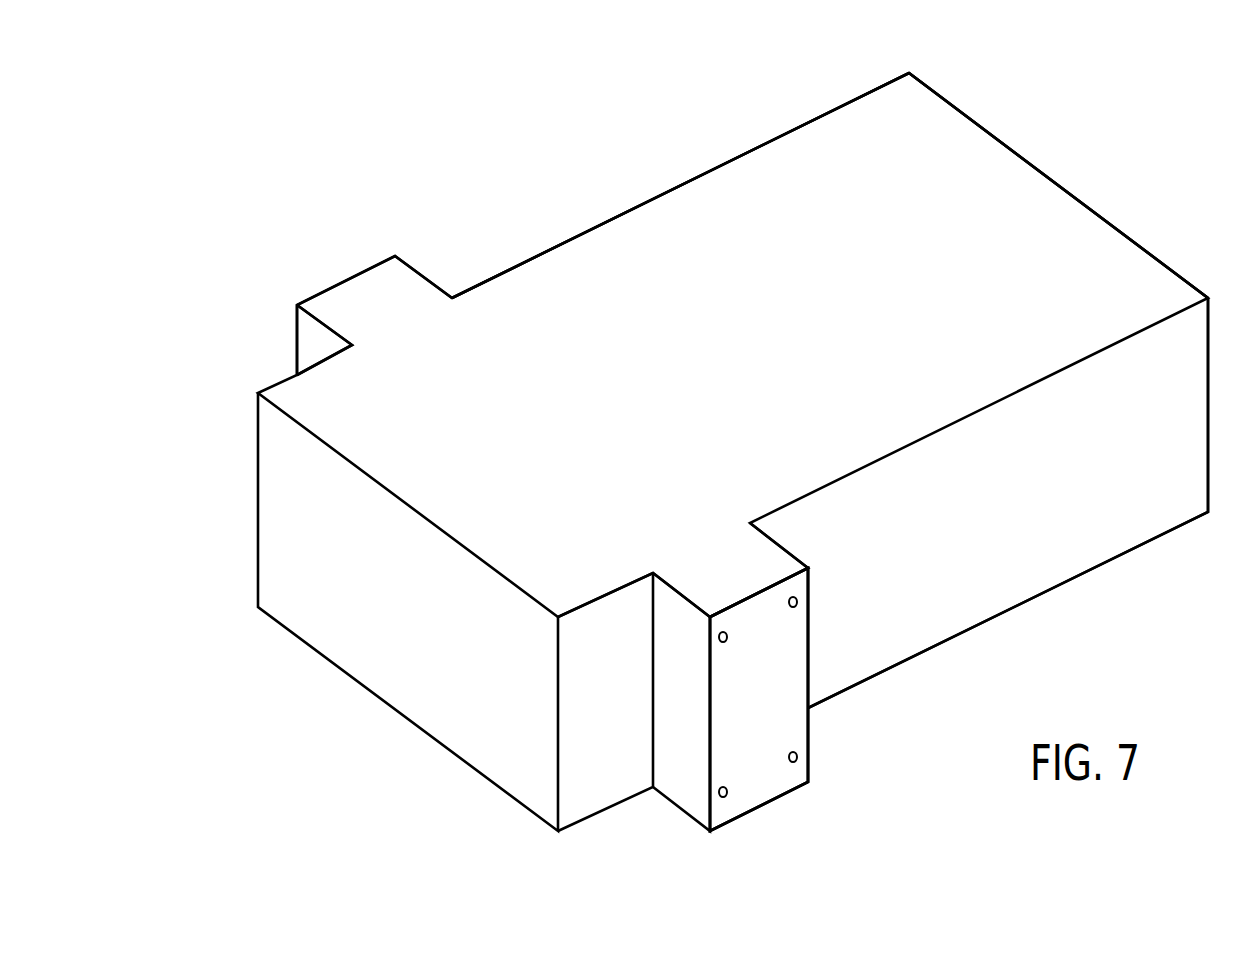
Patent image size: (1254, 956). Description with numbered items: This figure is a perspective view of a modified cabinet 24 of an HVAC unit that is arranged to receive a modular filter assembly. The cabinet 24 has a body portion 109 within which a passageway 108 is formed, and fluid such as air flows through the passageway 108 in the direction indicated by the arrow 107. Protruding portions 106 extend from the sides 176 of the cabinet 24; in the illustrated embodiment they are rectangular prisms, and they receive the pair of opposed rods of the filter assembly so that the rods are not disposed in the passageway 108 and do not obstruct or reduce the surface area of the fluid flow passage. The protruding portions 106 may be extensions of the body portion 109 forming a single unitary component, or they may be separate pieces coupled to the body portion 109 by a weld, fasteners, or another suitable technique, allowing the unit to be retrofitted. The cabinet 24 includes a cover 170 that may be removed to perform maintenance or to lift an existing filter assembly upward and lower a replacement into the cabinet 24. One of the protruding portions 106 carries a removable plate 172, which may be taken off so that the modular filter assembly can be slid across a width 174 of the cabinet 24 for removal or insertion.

The cabinet 24 is at (1060, 156).
The protruding portions 106 is at (376, 308).
The arrow 107 is at (1055, 189).
The passageway 108 is at (676, 266).
The body portion 109 is at (1022, 155).
The cover 170 is at (943, 137).
The removable plate 172 is at (772, 690).
The width 174 is at (128, 671).
The sides 176 is at (528, 257).